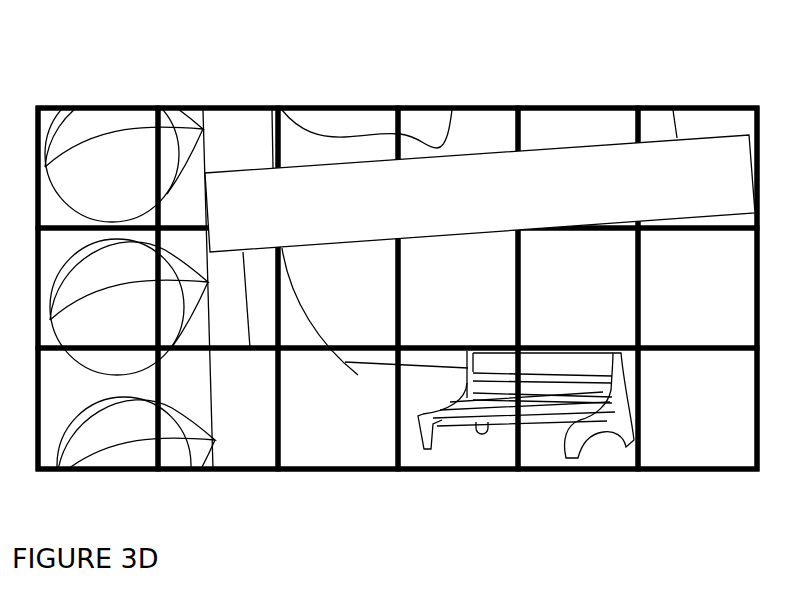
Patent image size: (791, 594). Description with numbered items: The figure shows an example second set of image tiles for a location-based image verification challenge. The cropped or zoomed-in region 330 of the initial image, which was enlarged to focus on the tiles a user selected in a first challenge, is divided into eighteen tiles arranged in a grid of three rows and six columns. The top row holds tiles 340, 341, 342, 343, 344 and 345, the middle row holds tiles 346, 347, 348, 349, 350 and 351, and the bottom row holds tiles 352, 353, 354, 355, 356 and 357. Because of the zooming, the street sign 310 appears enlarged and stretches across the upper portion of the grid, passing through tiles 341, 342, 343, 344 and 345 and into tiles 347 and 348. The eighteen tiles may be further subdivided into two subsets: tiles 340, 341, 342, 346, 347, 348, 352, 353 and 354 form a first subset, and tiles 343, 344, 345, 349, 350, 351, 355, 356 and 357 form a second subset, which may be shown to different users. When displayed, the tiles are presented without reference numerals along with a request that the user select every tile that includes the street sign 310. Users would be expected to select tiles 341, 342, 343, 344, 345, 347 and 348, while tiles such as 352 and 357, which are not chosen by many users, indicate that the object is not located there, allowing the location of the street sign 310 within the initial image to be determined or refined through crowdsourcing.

The street sign 310 is at (430, 156).
The region 330 is at (520, 107).
The tile 340 is at (120, 157).
The tile 341 is at (232, 171).
The tile 342 is at (365, 168).
The tile 343 is at (458, 168).
The tile 344 is at (578, 168).
The tile 345 is at (697, 168).
The tile 346 is at (123, 301).
The tile 347 is at (218, 288).
The tile 348 is at (338, 301).
The tile 349 is at (458, 288).
The tile 350 is at (578, 288).
The tile 351 is at (697, 288).
The tile 352 is at (126, 440).
The tile 353 is at (218, 408).
The tile 354 is at (338, 408).
The tile 355 is at (431, 408).
The tile 356 is at (535, 408).
The tile 357 is at (697, 408).